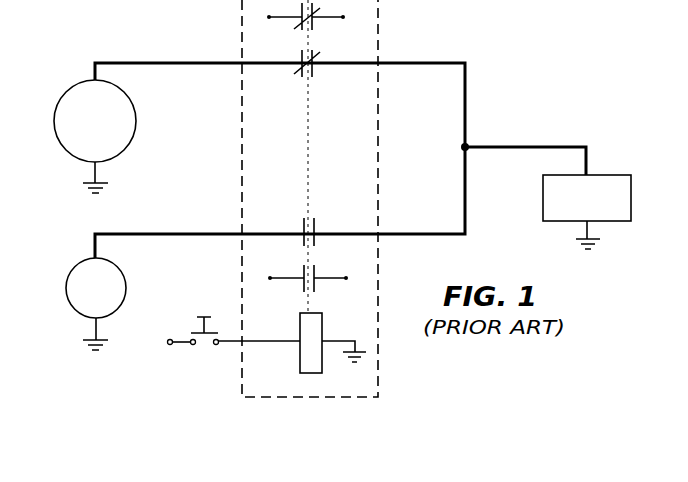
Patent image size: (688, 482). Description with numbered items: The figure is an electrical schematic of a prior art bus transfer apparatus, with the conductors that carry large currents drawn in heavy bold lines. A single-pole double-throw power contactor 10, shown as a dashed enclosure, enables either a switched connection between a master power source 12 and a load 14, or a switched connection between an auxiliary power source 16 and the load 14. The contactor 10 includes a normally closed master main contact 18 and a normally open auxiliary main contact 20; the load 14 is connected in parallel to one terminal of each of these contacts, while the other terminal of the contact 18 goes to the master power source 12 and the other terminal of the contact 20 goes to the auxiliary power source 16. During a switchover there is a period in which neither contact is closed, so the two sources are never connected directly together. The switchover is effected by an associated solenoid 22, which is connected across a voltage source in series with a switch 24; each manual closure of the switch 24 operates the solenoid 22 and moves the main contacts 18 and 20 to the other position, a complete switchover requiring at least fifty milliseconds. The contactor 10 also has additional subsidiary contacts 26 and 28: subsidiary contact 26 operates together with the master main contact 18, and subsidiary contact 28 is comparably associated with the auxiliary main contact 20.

The power contactor 10 is at (380, 40).
The master power source 12 is at (140, 92).
The load 14 is at (633, 184).
The auxiliary power source 16 is at (125, 277).
The normally closed master main contact 18 is at (316, 66).
The normally open auxiliary main contact 20 is at (316, 222).
The solenoid 22 is at (323, 321).
The switch 24 is at (206, 347).
The subsidiary contact 26 is at (318, 20).
The subsidiary contact 28 is at (316, 268).